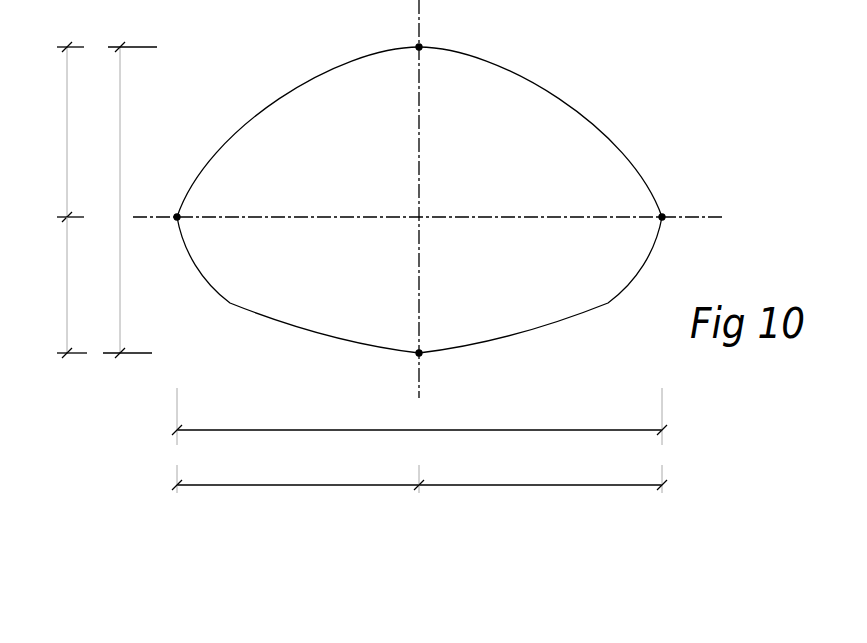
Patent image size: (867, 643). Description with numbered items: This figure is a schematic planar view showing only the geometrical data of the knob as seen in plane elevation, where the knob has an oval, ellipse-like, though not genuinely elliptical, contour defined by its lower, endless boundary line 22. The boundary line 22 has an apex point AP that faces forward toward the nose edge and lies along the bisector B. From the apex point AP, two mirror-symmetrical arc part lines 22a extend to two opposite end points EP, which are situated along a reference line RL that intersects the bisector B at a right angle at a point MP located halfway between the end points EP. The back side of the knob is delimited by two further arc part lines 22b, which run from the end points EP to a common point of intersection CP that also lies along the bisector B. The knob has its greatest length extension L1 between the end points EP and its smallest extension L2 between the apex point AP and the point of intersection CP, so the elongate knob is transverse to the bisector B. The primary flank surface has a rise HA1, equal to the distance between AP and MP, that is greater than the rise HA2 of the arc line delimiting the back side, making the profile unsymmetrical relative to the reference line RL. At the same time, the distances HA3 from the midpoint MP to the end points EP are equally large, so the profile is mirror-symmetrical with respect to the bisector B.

The boundary line 22 is at (607, 131).
The arc part lines 22a is at (295, 88).
The arc part lines 22b is at (293, 324).
The apex point AP is at (420, 46).
The midpoint MP is at (420, 216).
The point of intersection CP is at (417, 356).
The bisector B is at (420, 372).
The end points EP is at (176, 216).
The reference line RL is at (428, 207).
The rise HA1 is at (50, 132).
The rise HA2 is at (52, 287).
The distances HA3 is at (419, 475).
The greatest length extension L1 is at (419, 416).
The smallest extension L2 is at (123, 200).